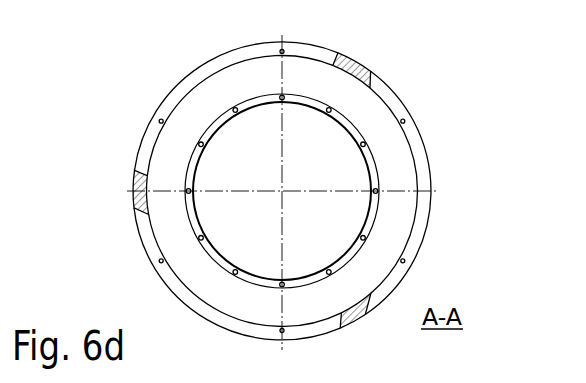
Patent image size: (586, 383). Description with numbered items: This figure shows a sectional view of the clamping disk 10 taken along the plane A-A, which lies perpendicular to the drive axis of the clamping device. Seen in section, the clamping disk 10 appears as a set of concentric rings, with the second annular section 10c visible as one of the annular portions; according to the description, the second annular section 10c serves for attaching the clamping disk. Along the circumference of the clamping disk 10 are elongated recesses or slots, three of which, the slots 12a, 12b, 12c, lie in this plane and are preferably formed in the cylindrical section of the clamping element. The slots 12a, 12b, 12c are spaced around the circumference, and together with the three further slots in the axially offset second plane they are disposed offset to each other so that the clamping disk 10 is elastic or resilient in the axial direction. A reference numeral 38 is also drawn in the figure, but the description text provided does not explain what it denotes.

The clamping disk 10 is at (297, 176).
The second annular section 10c is at (320, 78).
The slot 12a is at (223, 62).
The slot 12b is at (145, 249).
The slot 12c is at (398, 102).
The inner ring with bolt holes 38 is at (203, 145).